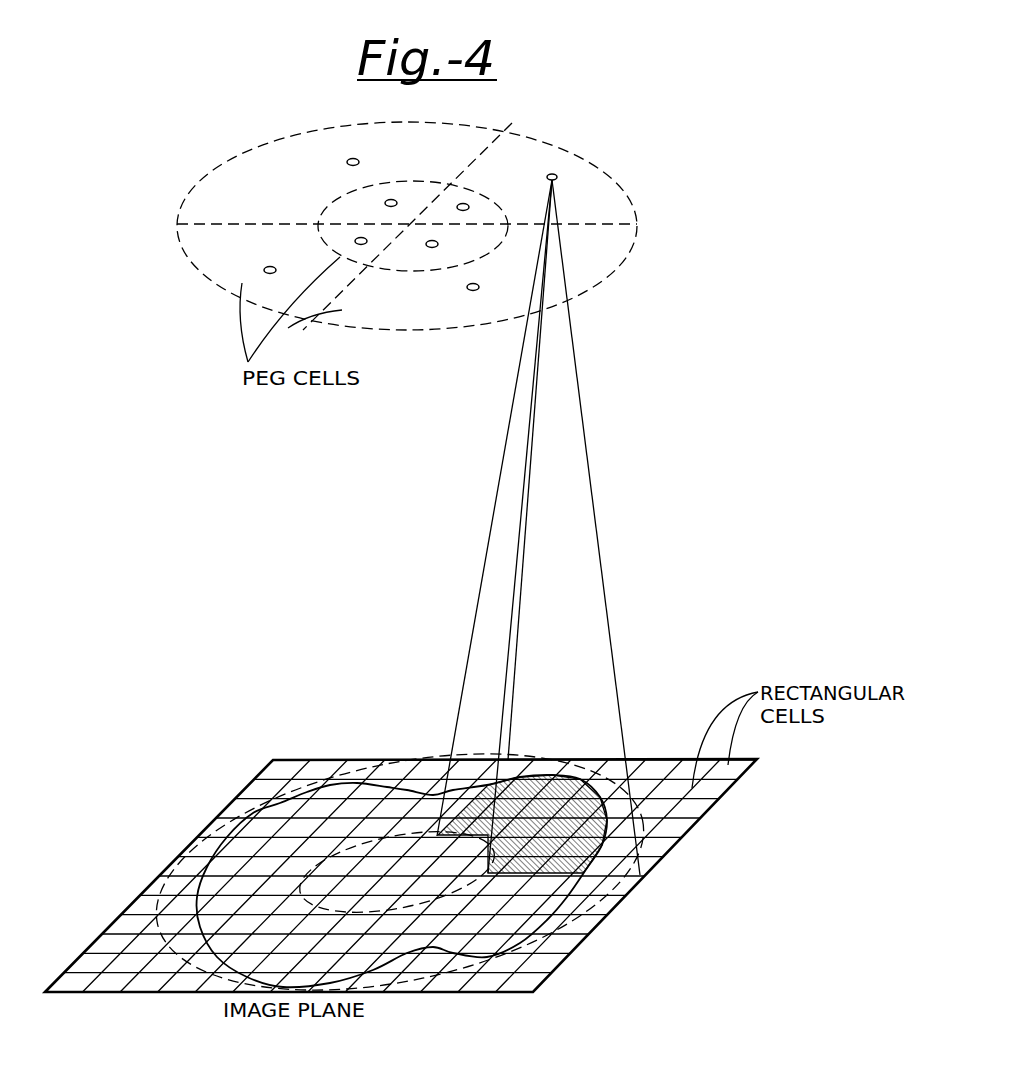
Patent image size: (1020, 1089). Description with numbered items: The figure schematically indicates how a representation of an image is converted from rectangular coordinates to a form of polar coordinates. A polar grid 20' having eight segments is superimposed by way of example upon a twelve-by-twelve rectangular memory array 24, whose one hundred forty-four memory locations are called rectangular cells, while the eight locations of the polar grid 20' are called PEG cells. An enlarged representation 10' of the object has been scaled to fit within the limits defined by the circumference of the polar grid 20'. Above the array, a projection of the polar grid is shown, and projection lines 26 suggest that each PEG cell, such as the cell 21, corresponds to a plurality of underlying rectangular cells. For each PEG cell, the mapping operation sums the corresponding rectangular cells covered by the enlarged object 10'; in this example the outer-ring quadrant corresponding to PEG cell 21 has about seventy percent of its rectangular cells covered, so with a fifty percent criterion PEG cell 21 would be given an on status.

The PEG cell 21 is at (593, 160).
The projection lines 26 is at (588, 457).
The polar grid 20' is at (400, 864).
The enlarged representation of the object 10' is at (310, 855).
The rectangular memory array 24 is at (243, 788).